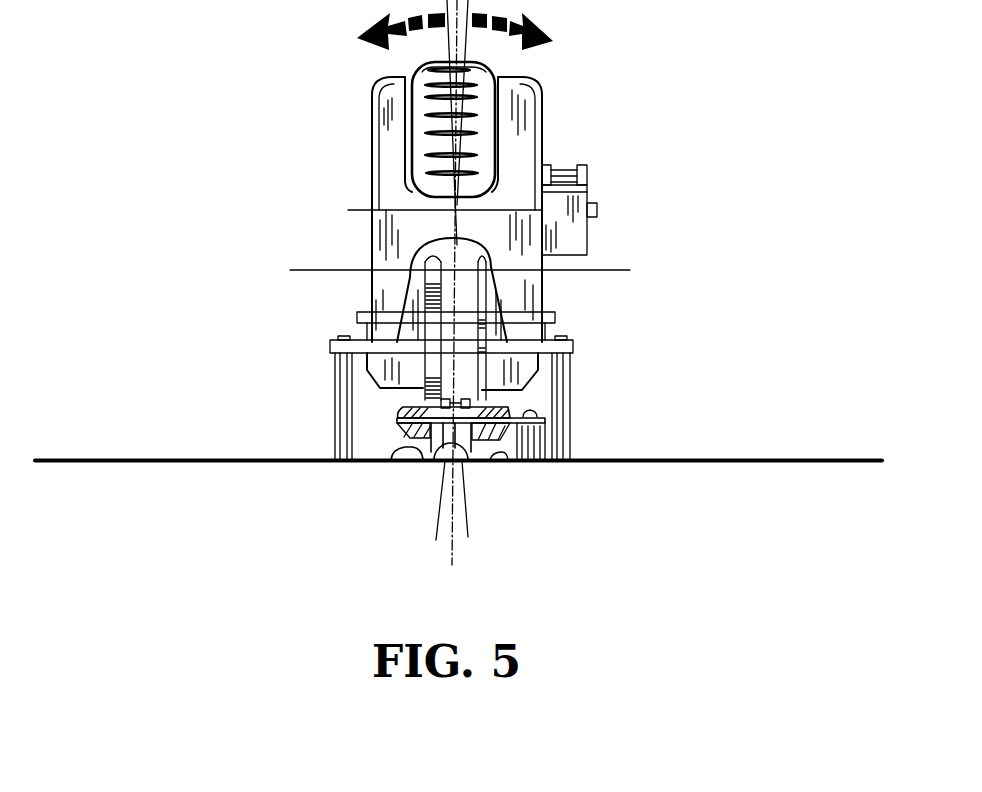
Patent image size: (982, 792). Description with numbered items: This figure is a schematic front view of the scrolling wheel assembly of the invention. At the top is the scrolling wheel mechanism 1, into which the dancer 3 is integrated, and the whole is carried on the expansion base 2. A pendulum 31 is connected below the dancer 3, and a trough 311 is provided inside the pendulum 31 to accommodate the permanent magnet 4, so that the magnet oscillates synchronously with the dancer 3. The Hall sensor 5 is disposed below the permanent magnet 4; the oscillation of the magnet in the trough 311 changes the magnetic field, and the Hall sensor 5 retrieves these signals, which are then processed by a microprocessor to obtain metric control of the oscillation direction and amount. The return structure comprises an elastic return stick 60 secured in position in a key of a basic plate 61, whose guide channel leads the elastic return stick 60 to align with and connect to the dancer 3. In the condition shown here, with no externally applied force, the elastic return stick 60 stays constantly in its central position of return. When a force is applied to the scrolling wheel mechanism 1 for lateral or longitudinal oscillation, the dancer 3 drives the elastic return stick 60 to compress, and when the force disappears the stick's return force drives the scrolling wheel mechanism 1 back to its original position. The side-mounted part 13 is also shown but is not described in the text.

The scrolling wheel mechanism 1 is at (551, 133).
The terminal block 13 is at (587, 170).
The expansion base 2 is at (495, 302).
The dancer 3 is at (440, 288).
The elastic return stick 60 is at (457, 400).
The permanent magnet 4 is at (487, 415).
The pendulum 31 is at (493, 432).
The trough 311 is at (432, 428).
The basic plate 61 is at (425, 465).
The Hall sensor 5 is at (390, 463).